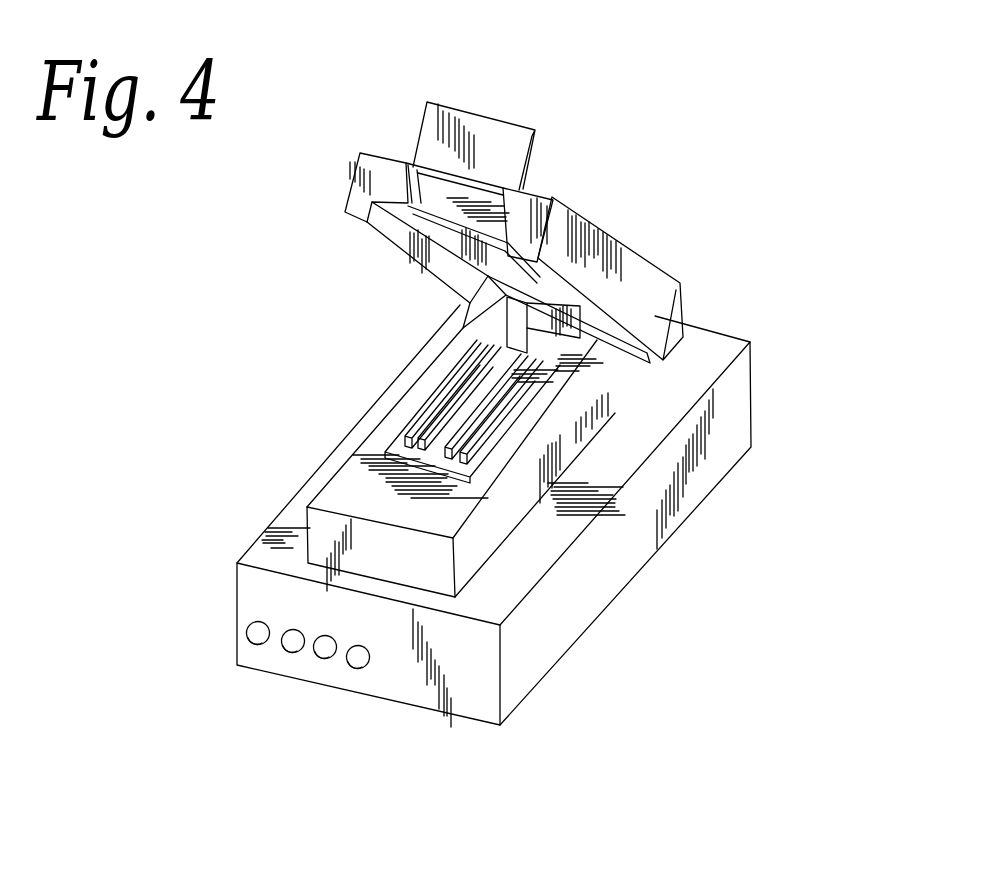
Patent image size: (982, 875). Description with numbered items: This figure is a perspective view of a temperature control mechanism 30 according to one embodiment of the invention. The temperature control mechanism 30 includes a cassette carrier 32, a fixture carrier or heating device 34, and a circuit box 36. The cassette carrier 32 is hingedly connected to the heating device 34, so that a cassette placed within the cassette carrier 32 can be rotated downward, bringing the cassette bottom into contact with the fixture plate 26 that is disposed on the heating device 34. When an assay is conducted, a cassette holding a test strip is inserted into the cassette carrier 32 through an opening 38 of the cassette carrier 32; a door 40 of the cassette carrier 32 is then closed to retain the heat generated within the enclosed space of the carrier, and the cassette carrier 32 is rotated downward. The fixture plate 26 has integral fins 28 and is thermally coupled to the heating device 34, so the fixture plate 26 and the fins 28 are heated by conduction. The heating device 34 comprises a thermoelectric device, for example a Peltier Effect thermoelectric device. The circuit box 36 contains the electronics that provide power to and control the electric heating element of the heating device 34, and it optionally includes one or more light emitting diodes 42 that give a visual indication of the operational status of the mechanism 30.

The temperature control mechanism 30 is at (770, 114).
The cassette carrier 32 is at (622, 266).
The heating device 34 is at (613, 390).
The circuit box 36 is at (593, 592).
The fixture plate 26 is at (357, 441).
The fins 28 is at (440, 395).
The opening 38 is at (420, 184).
The door 40 is at (502, 132).
The light emitting diodes 42 is at (285, 650).